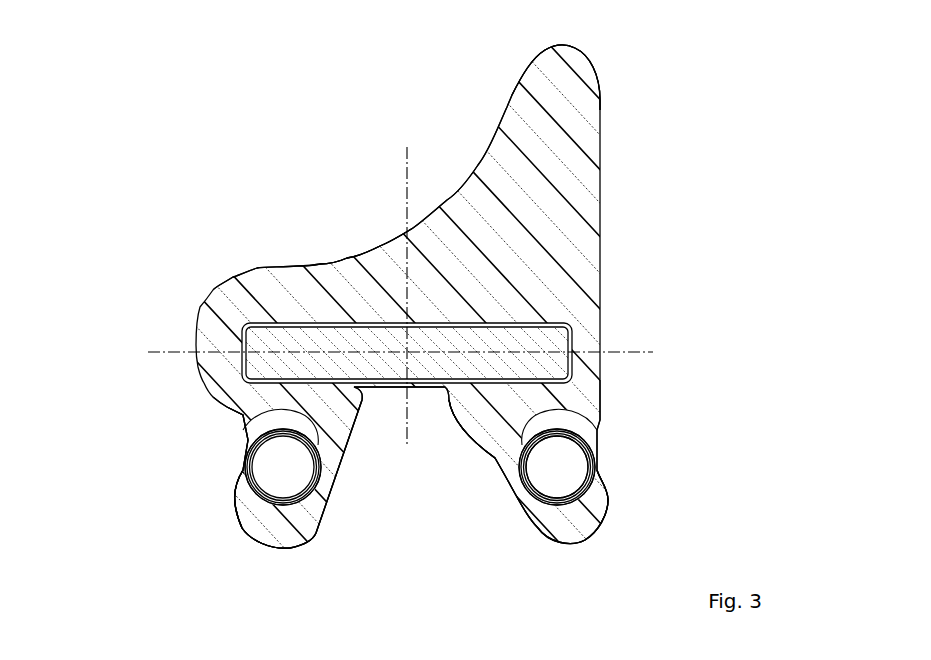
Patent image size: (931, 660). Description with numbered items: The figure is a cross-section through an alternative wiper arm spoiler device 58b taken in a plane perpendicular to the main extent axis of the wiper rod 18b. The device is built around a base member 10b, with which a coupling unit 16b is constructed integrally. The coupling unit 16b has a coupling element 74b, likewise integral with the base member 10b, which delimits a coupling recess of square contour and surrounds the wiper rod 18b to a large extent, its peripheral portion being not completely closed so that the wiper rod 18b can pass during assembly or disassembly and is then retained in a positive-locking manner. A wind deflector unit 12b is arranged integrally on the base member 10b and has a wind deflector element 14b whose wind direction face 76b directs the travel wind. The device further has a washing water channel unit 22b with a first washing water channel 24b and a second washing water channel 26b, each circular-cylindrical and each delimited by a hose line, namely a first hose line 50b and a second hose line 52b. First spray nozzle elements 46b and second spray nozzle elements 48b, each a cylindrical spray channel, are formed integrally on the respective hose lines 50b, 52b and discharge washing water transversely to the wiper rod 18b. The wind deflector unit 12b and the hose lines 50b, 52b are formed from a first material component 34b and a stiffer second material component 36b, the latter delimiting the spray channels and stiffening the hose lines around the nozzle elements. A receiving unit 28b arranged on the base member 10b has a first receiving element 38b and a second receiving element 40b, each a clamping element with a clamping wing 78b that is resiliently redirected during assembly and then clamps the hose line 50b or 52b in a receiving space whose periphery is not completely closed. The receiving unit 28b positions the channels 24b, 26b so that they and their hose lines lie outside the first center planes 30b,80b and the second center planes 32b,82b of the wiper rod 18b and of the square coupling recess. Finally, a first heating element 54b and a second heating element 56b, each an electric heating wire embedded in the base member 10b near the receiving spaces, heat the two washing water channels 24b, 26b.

The base member 10b is at (215, 290).
The wind deflector unit 12b is at (650, 152).
The wind deflector element 14b is at (598, 92).
The coupling unit 16b is at (382, 436).
The wiper rod 18b is at (575, 330).
The washing water channel unit 22b is at (338, 448).
The first washing water channel 24b is at (592, 452).
The second washing water channel 26b is at (265, 467).
The receiving unit 28b is at (300, 528).
The first center planes of the wiper rod and of the coupling recess 30b,80b is at (407, 160).
The second center planes of the wiper rod and of the coupling recess 32b,82b is at (174, 346).
The first material component 34b is at (260, 412).
The second material component 36b is at (247, 448).
The first receiving element 38b is at (552, 535).
The second receiving element 40b is at (282, 535).
The first spray nozzle elements 46b is at (575, 462).
The second spray nozzle elements 48b is at (243, 478).
The first hose line 50b is at (600, 510).
The second hose line 52b is at (245, 512).
The first heating element 54b is at (603, 418).
The second heating element 56b is at (240, 414).
The wiper arm spoiler device 58b is at (277, 206).
The coupling element 74b is at (500, 454).
The wind direction face 76b is at (371, 249).
The clamping wing 78b is at (250, 528).